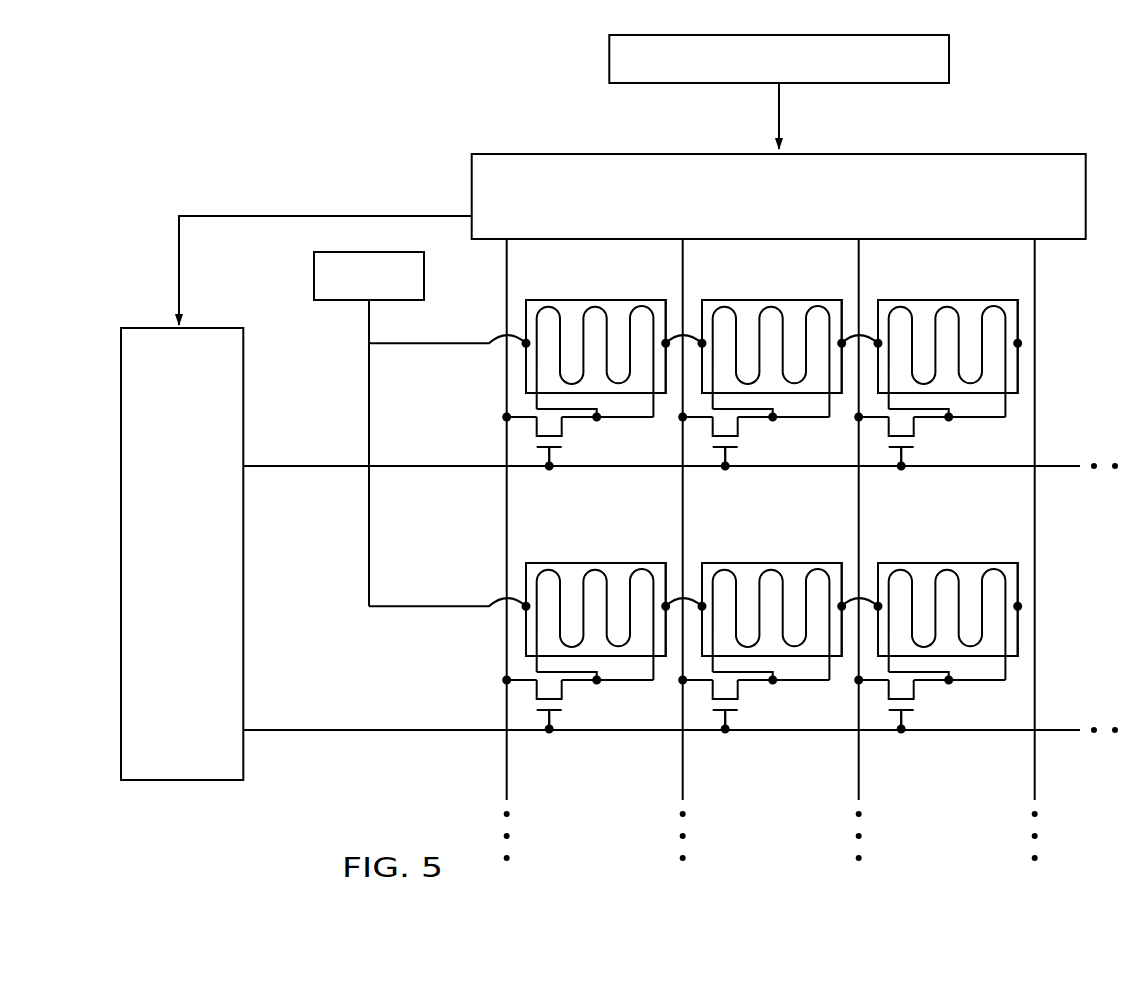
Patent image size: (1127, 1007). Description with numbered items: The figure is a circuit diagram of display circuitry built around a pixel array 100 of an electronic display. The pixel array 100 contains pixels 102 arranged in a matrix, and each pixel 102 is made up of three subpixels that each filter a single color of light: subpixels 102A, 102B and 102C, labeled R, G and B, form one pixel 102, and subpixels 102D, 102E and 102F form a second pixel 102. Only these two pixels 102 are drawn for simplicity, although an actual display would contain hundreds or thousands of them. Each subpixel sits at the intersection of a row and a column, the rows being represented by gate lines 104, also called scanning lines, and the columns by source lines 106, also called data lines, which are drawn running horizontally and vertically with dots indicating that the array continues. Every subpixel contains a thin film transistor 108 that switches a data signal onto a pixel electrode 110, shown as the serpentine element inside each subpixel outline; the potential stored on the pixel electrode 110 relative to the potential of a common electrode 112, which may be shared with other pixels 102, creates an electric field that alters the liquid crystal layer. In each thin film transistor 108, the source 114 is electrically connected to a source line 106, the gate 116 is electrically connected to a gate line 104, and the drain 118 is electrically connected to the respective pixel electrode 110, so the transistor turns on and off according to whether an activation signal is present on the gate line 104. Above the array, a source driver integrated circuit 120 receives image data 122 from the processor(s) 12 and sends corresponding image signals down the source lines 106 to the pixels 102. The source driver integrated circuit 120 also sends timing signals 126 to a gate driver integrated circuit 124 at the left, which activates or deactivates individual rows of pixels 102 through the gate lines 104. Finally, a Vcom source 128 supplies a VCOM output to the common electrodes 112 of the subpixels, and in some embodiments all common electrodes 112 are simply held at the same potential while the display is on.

The processor(s) 12 is at (917, 36).
The pixel array 100 is at (422, 108).
The pixel 102 is at (485, 406).
The subpixel 102A is at (550, 324).
The subpixel 102B is at (726, 324).
The subpixel 102C is at (902, 324).
The subpixel 102D is at (550, 587).
The subpixel 102E is at (726, 587).
The subpixel 102F is at (902, 587).
The gate line 104 is at (1058, 466).
The source line 106 is at (508, 795).
The thin film transistor 108 is at (771, 592).
The pixel electrode 110 is at (771, 477).
The common electrode 112 is at (772, 453).
The source 114 is at (676, 572).
The gate 116 is at (747, 607).
The drain 118 is at (784, 572).
The source driver integrated circuit 120 is at (918, 154).
The image data 122 is at (781, 120).
The gate driver integrated circuit 124 is at (222, 328).
The timing signals 126 is at (219, 216).
The Vcom source 128 is at (348, 252).